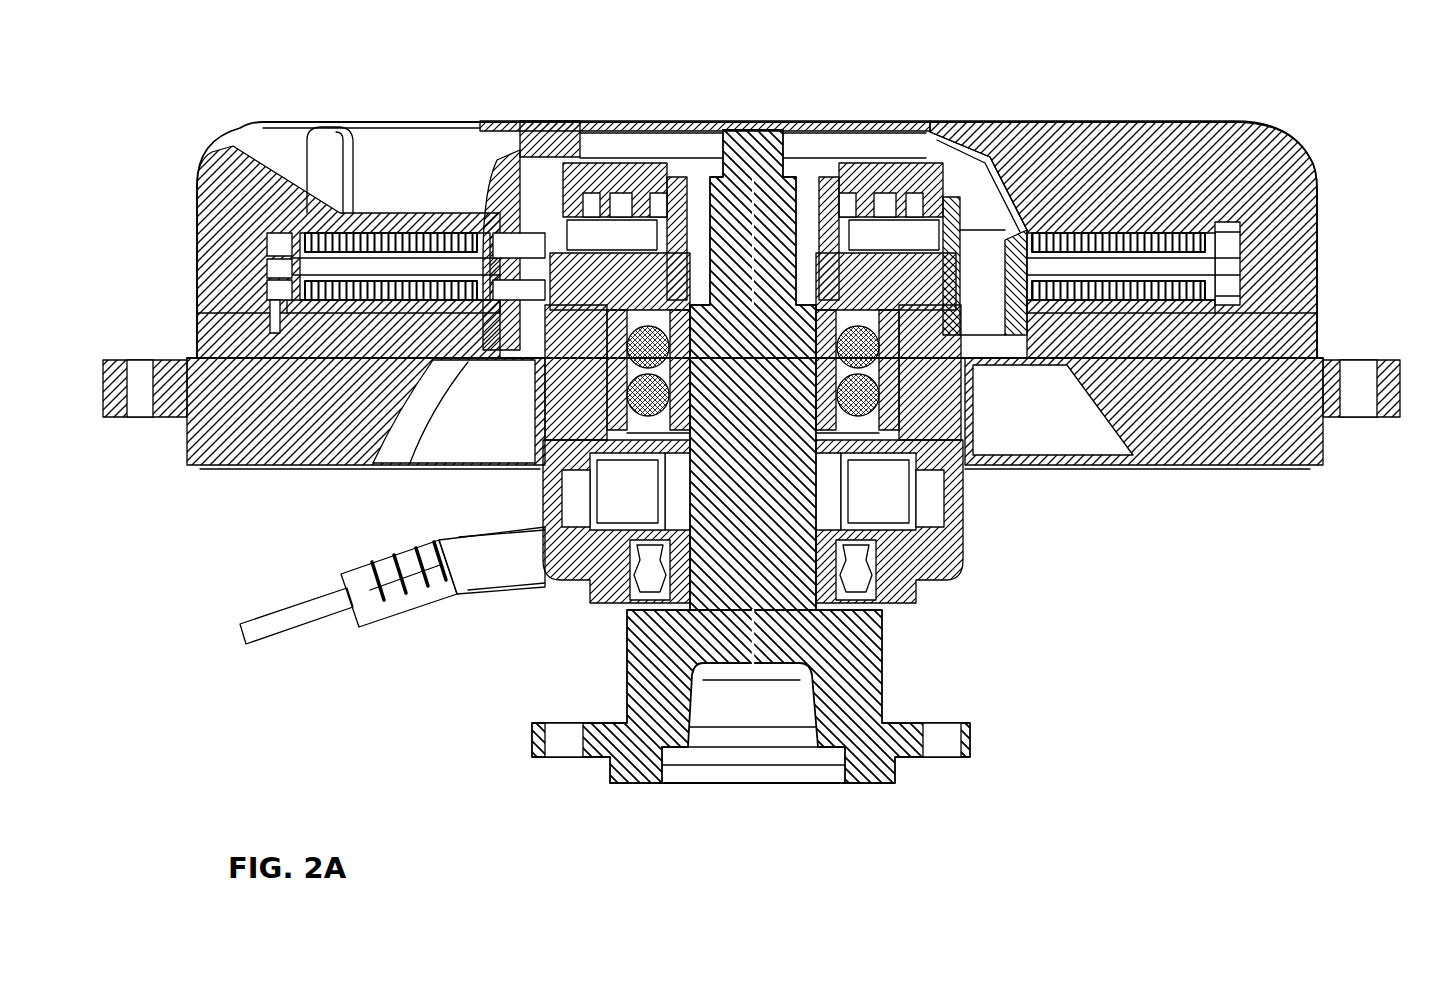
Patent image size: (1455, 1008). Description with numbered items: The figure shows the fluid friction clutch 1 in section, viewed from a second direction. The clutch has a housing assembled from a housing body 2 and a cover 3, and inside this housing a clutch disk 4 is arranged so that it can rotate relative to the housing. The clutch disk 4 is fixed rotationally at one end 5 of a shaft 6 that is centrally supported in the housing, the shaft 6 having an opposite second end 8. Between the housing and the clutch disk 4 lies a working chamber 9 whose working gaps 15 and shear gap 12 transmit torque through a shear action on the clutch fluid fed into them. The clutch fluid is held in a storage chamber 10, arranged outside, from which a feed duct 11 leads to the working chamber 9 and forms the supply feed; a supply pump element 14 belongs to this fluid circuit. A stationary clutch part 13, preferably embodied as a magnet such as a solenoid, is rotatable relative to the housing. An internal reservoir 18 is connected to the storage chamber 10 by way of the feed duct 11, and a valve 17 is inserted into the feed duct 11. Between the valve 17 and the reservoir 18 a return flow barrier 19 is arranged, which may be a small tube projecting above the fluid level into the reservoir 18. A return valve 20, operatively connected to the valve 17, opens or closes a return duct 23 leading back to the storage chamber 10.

The fluid friction clutch 1 is at (774, 287).
The housing body 2 is at (1256, 448).
The cover 3 is at (796, 202).
The clutch disk 4 is at (1130, 268).
The end of the shaft 5 is at (790, 212).
The shaft 6 is at (754, 696).
The second end of the shaft 8 is at (643, 643).
The working chamber 9 is at (347, 300).
The storage chamber 10 is at (277, 242).
The feed duct 11 is at (365, 268).
The shear gap 12 is at (267, 263).
The stationary clutch part 13 is at (937, 543).
The supply pump element 14 is at (280, 270).
The working gaps 15 is at (1133, 297).
The valve 17 is at (513, 247).
The internal reservoir 18 is at (507, 257).
The return flow barrier 19 is at (490, 287).
The return valve 20 is at (1020, 278).
The return duct 23 is at (1213, 267).